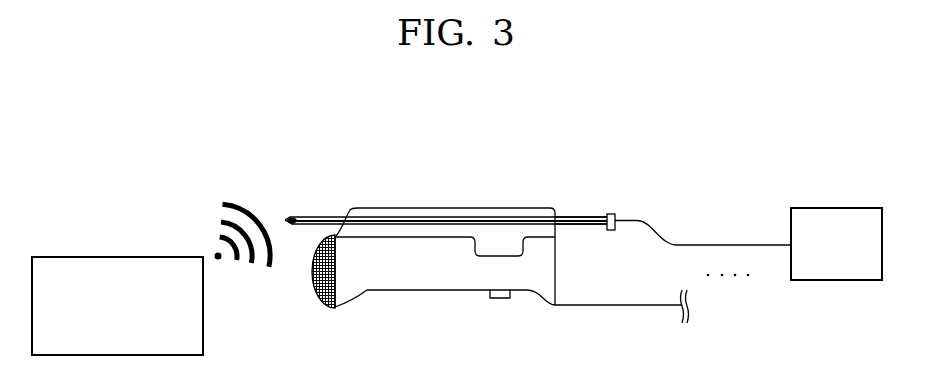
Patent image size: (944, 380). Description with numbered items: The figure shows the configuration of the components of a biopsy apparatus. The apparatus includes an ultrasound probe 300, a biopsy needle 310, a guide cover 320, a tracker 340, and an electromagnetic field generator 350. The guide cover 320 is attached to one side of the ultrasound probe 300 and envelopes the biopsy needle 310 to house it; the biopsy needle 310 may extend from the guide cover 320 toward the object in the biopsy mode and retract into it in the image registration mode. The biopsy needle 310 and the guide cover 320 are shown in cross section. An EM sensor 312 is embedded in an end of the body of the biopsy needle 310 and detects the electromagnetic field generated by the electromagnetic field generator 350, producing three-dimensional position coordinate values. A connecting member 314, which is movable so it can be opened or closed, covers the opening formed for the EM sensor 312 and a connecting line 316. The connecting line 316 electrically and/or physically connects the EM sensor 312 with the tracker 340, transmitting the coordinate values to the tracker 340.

The ultrasound probe 300 is at (417, 280).
The biopsy needle 310 is at (335, 213).
The EM sensor 312 is at (289, 218).
The connecting member 314 is at (612, 214).
The connecting line 316 is at (567, 218).
The guide cover 320 is at (483, 212).
The tracker 340 is at (832, 207).
The electromagnetic field generator 350 is at (139, 256).